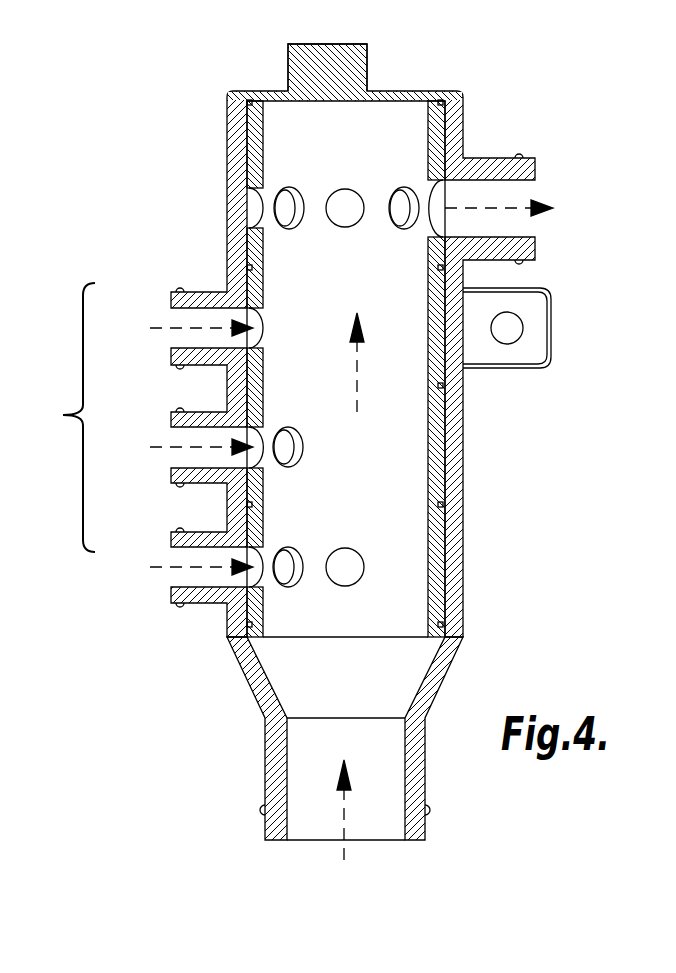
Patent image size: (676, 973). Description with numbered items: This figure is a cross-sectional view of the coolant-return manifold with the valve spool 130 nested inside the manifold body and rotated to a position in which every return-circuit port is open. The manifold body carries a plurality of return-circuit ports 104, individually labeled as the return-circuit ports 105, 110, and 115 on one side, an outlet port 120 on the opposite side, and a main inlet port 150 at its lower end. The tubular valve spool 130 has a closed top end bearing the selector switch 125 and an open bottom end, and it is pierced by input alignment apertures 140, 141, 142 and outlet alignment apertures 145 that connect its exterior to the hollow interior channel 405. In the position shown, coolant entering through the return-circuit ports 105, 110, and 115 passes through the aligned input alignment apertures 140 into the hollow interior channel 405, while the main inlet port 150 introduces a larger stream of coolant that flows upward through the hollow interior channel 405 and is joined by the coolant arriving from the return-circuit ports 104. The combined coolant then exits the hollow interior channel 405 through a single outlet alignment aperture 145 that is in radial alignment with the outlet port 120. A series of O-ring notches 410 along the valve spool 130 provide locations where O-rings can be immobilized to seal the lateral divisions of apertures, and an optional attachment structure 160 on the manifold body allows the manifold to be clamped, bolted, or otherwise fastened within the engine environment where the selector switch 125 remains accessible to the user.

The return-circuit ports 104 is at (61, 417).
The return-circuit port 105 is at (171, 294).
The return-circuit port 110 is at (233, 203).
The return-circuit port 115 is at (171, 534).
The outlet port 120 is at (536, 162).
The selector switch 125 is at (367, 47).
The valve spool 130 is at (253, 137).
The input alignment apertures 140 is at (247, 294).
The input alignment apertures 141 is at (284, 466).
The input alignment aperture 142 is at (365, 563).
The outlet alignment apertures 145 is at (343, 190).
The inlet port 150 is at (388, 841).
The attachment structure 160 is at (534, 322).
The hollow interior channel 405 is at (353, 278).
The O-ring notches 410 is at (442, 100).